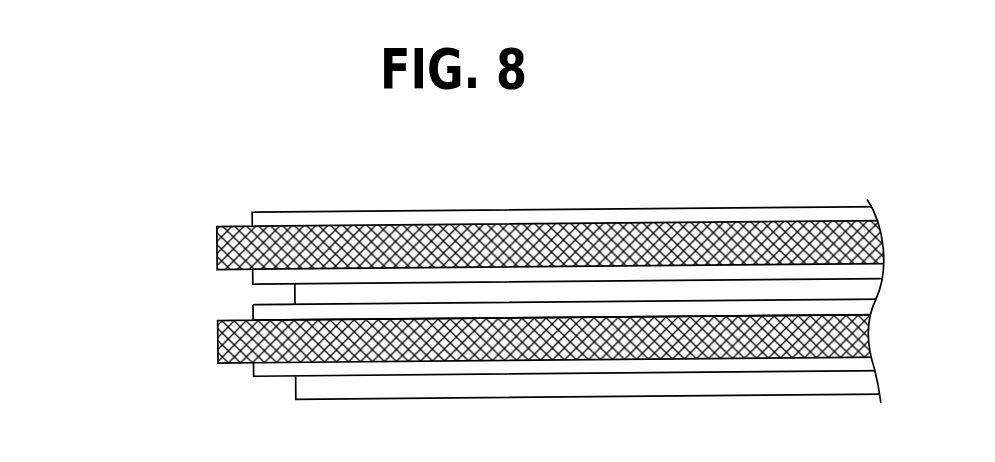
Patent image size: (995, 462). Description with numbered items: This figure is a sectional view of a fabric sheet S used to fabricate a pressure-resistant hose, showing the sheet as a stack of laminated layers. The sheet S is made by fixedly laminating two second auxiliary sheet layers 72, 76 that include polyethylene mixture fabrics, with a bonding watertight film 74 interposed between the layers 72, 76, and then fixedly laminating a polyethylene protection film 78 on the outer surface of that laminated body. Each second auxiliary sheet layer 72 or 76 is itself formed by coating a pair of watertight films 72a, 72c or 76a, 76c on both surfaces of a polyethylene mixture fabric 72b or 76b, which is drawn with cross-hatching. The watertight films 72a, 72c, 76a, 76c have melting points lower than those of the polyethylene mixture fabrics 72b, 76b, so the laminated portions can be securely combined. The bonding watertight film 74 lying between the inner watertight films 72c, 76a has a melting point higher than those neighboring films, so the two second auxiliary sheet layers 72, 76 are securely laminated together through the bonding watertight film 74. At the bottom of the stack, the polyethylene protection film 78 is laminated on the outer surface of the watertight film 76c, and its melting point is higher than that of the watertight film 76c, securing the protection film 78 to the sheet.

The fabric sheet S is at (602, 198).
The second auxiliary sheet layer 72 is at (482, 219).
The watertight film 72a is at (273, 221).
The polyethylene mixture fabric 72b is at (218, 247).
The watertight film 72c is at (262, 276).
The bonding watertight film 74 is at (297, 290).
The second auxiliary sheet layer 76 is at (483, 374).
The watertight film 76a is at (263, 313).
The polyethylene mixture fabric 76b is at (218, 345).
The watertight film 76c is at (262, 368).
The polyethylene protection film 78 is at (313, 390).